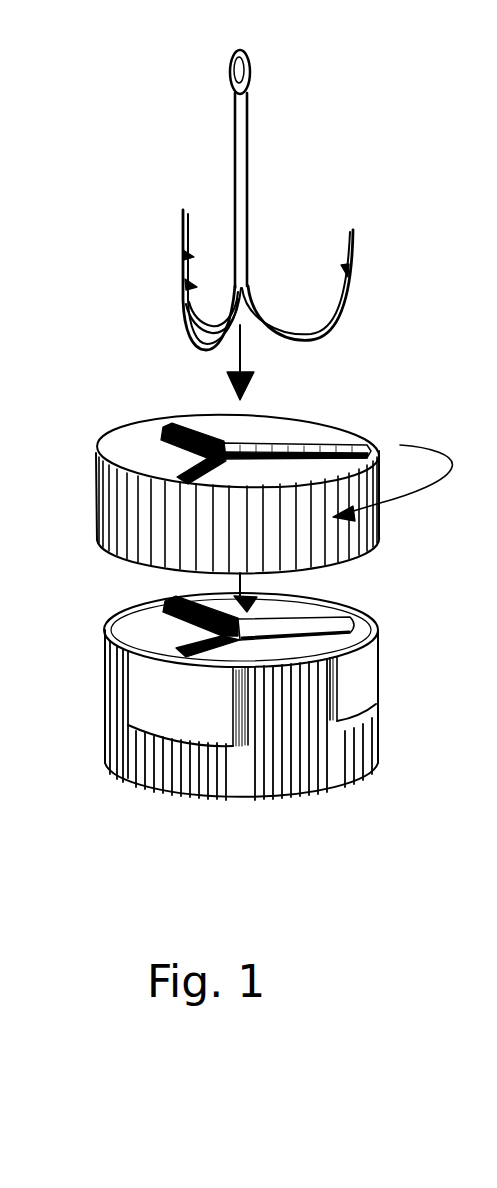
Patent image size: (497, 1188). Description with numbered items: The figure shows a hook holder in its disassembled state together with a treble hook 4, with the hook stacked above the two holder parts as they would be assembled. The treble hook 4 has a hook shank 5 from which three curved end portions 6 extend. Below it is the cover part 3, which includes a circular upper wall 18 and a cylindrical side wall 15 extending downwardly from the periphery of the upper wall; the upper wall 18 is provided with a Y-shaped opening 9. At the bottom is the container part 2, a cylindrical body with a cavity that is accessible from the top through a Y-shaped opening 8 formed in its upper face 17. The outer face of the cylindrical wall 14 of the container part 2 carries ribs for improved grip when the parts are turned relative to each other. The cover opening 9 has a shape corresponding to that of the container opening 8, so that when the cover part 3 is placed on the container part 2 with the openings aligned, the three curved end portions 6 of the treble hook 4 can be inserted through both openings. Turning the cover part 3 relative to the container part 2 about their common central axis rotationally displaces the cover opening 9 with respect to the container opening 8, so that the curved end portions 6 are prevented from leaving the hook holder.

The container part 2 is at (397, 790).
The cover part 3 is at (68, 491).
The treble hook 4 is at (380, 155).
The hook shank 5 is at (247, 155).
The curved end portions 6 is at (347, 320).
The opening 8 is at (313, 617).
The opening 9 is at (317, 450).
The cylindrical wall 14 is at (287, 748).
The cylindrical side wall 15 is at (130, 530).
The upper face 17 is at (130, 627).
The upper wall 18 is at (146, 457).